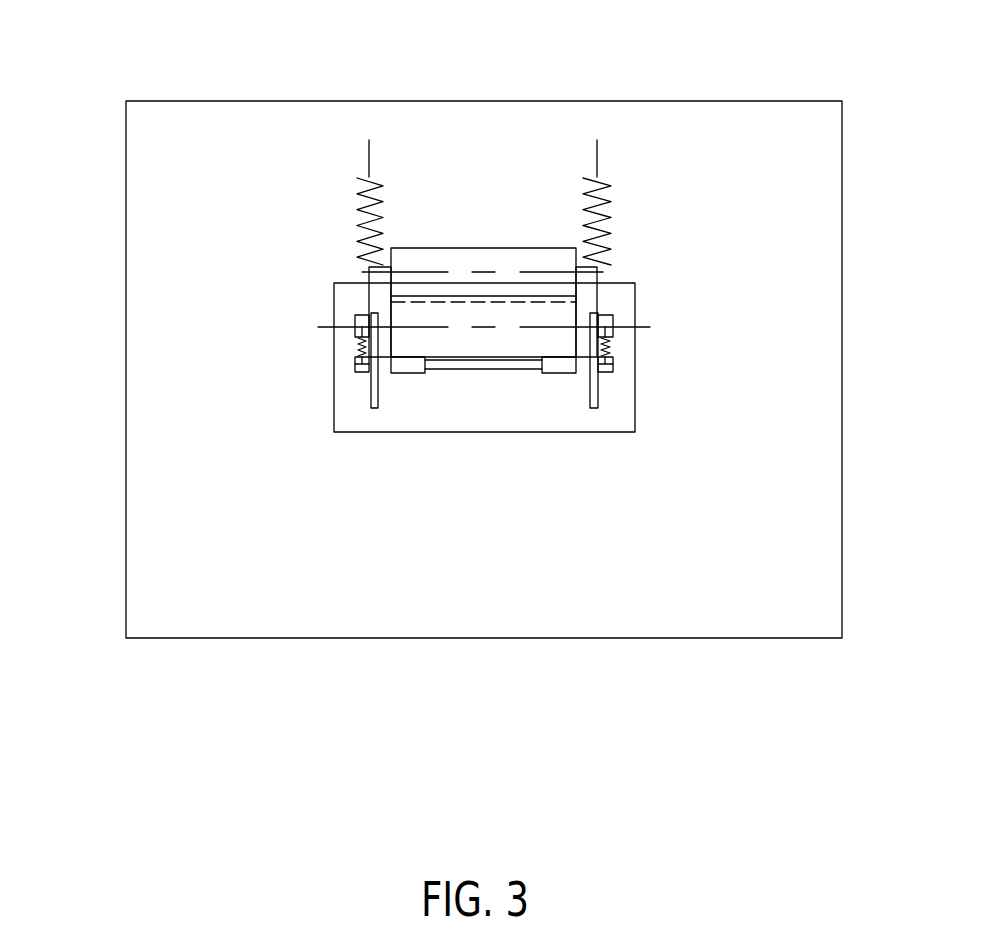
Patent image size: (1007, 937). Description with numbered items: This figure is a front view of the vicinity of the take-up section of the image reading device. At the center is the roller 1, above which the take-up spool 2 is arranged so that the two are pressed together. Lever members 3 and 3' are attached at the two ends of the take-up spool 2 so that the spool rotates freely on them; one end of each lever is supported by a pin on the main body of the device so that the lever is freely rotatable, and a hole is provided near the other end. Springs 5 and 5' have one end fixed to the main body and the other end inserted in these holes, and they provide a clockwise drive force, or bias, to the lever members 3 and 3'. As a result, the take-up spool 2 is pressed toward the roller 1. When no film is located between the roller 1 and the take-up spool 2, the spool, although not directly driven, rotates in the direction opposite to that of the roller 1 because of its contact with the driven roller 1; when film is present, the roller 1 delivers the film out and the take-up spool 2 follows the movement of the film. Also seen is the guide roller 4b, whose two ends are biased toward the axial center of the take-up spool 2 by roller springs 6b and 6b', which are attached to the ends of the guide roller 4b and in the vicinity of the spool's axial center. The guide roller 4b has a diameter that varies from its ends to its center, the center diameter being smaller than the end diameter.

The roller 1 is at (495, 258).
The take-up spool 2 is at (548, 337).
The lever member 3 is at (218, 366).
The lever member 3' is at (746, 360).
The guide roller 4b is at (557, 365).
The spring 5 is at (322, 133).
The spring 5' is at (637, 132).
The roller spring 6b is at (207, 331).
The roller spring 6b' is at (755, 320).